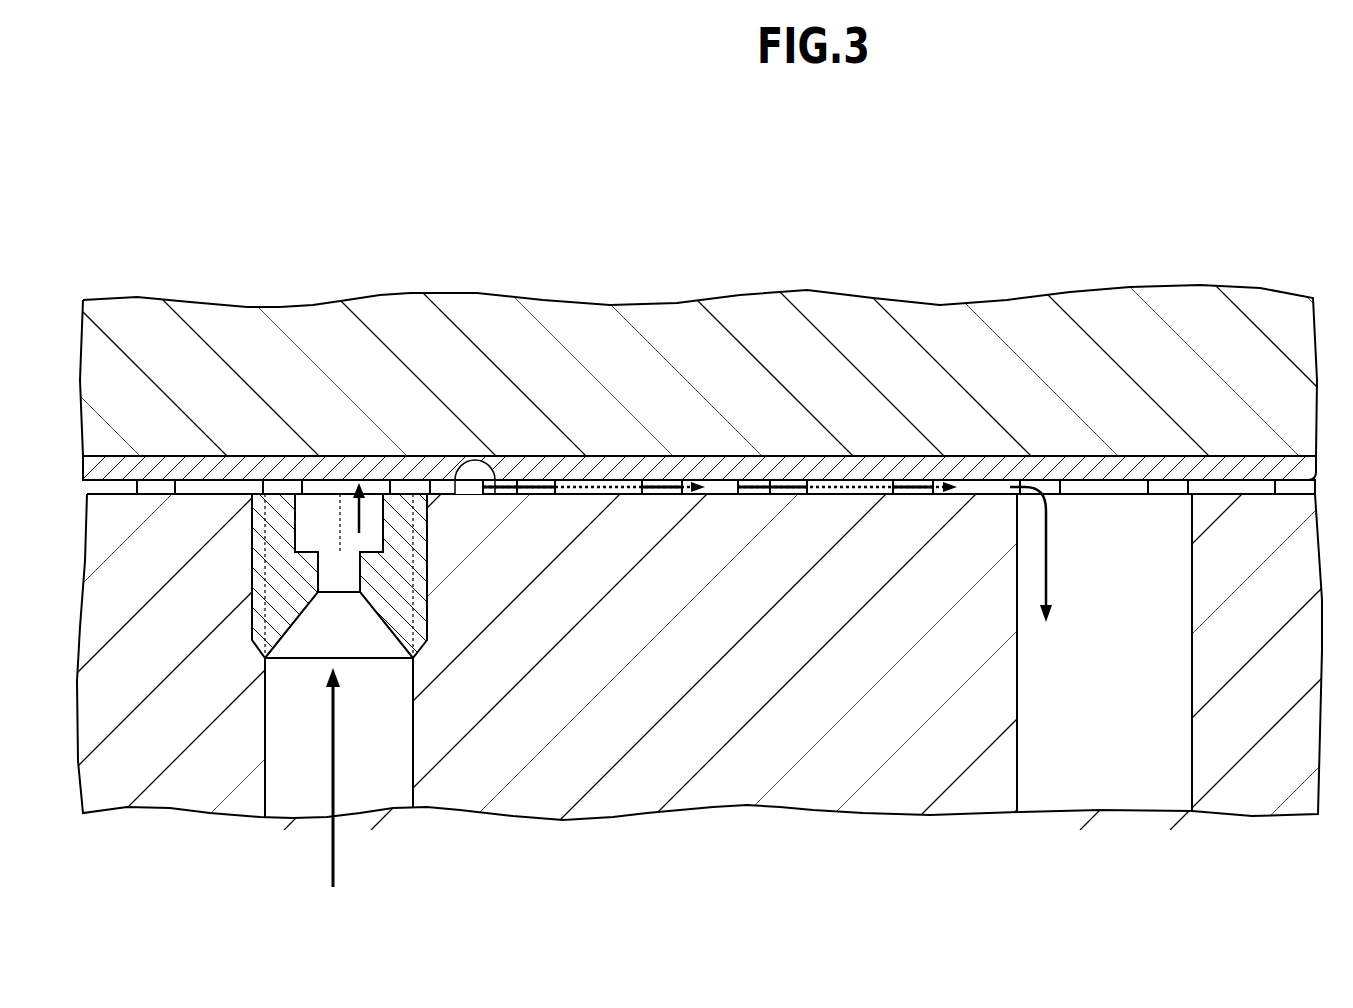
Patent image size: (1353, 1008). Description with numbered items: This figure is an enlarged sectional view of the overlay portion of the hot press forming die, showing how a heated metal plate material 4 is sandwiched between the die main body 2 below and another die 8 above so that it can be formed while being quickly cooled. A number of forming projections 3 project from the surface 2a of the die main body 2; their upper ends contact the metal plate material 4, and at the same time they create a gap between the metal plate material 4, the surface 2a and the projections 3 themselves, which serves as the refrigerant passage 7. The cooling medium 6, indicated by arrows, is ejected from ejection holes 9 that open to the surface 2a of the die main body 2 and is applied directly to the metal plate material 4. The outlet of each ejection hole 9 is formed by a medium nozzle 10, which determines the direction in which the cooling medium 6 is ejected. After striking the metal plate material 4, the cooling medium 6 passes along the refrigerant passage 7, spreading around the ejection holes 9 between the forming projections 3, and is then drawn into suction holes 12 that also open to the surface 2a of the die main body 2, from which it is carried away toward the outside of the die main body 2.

The die main body 2 is at (671, 735).
The surface of the die main body 2a is at (497, 493).
The forming projections 3 is at (143, 479).
The metal plate material 4 is at (393, 447).
The cooling medium 6 is at (337, 782).
The refrigerant passage 7 is at (727, 488).
The another die 8 is at (731, 363).
The ejection holes 9 is at (267, 748).
The medium nozzle 10 is at (280, 598).
The suction holes 12 is at (1025, 690).